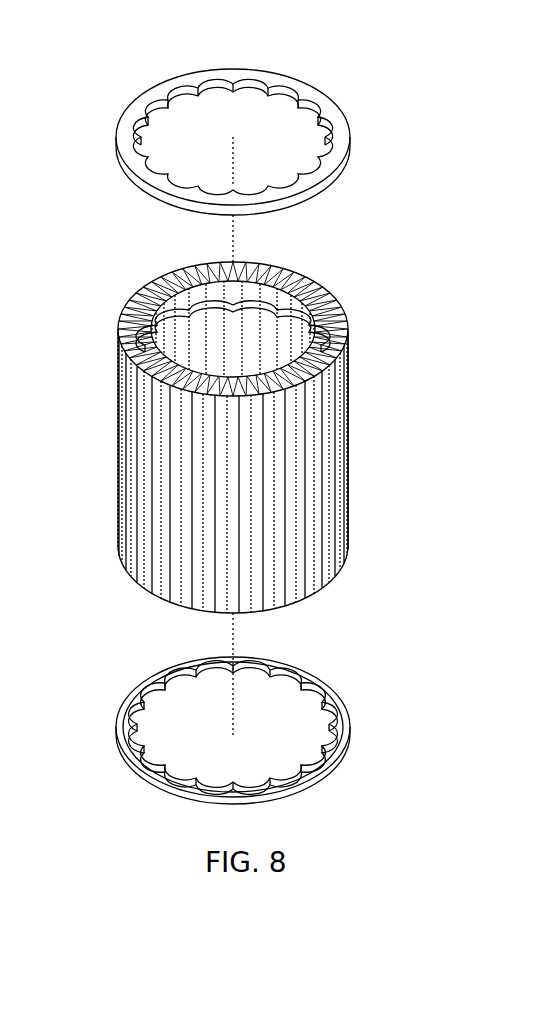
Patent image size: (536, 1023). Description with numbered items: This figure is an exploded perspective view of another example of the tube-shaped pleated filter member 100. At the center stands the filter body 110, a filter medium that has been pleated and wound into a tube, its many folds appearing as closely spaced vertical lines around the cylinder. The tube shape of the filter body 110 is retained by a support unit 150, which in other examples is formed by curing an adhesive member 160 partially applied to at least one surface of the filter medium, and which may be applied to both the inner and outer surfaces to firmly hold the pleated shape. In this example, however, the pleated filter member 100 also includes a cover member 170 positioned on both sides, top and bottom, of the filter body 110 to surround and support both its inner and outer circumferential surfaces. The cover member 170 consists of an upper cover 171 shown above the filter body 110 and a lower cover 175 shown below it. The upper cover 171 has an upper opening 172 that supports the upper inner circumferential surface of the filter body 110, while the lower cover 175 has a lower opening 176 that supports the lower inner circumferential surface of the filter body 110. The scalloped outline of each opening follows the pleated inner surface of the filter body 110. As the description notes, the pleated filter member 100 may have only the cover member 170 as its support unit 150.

The tube-shaped pleated filter member 100 is at (72, 60).
The filter body 110 is at (269, 428).
The support unit 150 is at (281, 125).
The adhesive member 160 is at (297, 318).
The cover member 170 is at (281, 420).
The upper cover 171 is at (281, 125).
The upper opening 172 is at (263, 100).
The lower cover 175 is at (281, 727).
The lower opening 176 is at (283, 700).